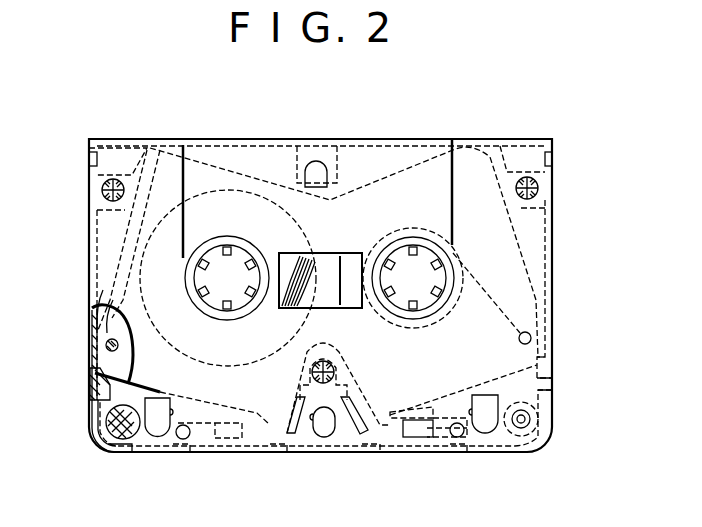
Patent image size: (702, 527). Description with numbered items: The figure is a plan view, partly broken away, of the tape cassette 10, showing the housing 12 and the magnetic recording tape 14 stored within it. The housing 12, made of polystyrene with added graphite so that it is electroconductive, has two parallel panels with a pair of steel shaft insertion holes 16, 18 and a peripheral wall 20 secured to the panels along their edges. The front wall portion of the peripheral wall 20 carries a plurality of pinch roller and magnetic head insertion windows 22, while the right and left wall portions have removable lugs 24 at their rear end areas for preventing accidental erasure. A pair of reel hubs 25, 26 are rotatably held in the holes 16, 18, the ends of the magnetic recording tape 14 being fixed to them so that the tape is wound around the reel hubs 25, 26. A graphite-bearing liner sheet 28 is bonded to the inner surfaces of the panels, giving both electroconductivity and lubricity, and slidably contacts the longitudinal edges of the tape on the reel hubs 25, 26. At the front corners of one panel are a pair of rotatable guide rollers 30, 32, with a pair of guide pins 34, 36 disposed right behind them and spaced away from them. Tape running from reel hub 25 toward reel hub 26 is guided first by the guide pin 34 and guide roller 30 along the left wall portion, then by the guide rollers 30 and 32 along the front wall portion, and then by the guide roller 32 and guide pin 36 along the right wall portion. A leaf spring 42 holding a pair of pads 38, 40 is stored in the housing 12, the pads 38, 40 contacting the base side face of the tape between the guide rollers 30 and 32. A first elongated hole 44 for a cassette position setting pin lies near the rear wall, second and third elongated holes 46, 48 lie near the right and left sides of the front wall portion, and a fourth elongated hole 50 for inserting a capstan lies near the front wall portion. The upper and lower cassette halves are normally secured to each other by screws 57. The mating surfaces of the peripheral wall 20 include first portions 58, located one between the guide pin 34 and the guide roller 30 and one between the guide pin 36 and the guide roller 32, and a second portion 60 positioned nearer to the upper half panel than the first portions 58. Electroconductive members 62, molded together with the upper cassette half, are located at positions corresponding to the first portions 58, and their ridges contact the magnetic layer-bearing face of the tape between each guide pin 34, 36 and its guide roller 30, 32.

The tape cassette 10 is at (82, 283).
The housing 12 is at (100, 238).
The magnetic recording tape 14 is at (395, 448).
The shaft insertion hole 16 is at (213, 318).
The shaft insertion hole 18 is at (405, 322).
The peripheral wall 20 is at (93, 318).
The pinch roller and magnetic head insertion windows 22 is at (165, 458).
The removable lugs 24 is at (89, 158).
The reel hub 25 is at (227, 278).
The reel hub 26 is at (413, 278).
The liner sheet 28 is at (160, 157).
The guide roller 30 is at (134, 452).
The guide roller 32 is at (518, 446).
The guide pin 34 is at (119, 347).
The guide pin 36 is at (519, 338).
The pad 38 is at (228, 422).
The pad 40 is at (418, 418).
The leaf spring 42 is at (447, 420).
The first elongated hole 44 is at (320, 190).
The second elongated hole 46 is at (172, 413).
The third elongated hole 48 is at (484, 396).
The fourth elongated hole 50 is at (320, 440).
The screws 57 is at (102, 186).
The first portions of the mating surfaces 58 is at (545, 372).
The second portion of the mating surfaces 60 is at (552, 328).
The electroconductive members 62 is at (92, 394).